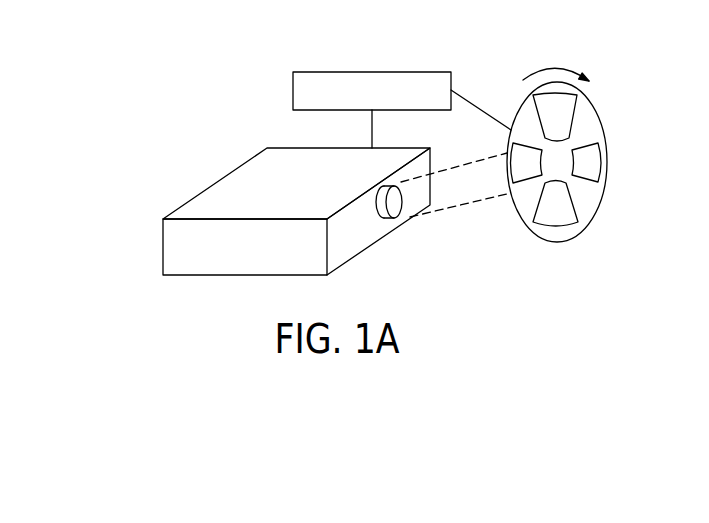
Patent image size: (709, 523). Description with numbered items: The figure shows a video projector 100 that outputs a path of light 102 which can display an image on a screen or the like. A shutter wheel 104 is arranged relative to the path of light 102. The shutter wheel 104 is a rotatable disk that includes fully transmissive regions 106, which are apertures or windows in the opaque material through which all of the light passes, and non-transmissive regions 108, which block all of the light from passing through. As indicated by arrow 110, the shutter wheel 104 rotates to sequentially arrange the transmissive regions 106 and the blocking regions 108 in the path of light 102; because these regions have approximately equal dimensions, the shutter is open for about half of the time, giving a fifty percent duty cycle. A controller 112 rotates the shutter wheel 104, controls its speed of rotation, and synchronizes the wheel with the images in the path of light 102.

The projector 100 is at (218, 168).
The path of light 102 is at (448, 187).
The shutter wheel 104 is at (595, 112).
The 100% transmissive regions 106 is at (567, 218).
The 0% transmissive regions 108 is at (587, 200).
The arrow 110 is at (556, 60).
The controller 112 is at (402, 72).